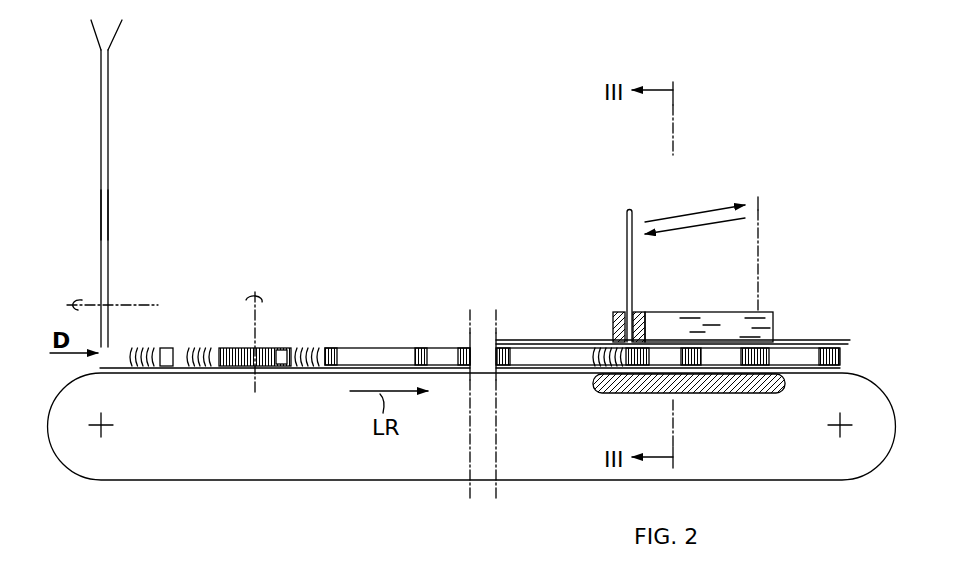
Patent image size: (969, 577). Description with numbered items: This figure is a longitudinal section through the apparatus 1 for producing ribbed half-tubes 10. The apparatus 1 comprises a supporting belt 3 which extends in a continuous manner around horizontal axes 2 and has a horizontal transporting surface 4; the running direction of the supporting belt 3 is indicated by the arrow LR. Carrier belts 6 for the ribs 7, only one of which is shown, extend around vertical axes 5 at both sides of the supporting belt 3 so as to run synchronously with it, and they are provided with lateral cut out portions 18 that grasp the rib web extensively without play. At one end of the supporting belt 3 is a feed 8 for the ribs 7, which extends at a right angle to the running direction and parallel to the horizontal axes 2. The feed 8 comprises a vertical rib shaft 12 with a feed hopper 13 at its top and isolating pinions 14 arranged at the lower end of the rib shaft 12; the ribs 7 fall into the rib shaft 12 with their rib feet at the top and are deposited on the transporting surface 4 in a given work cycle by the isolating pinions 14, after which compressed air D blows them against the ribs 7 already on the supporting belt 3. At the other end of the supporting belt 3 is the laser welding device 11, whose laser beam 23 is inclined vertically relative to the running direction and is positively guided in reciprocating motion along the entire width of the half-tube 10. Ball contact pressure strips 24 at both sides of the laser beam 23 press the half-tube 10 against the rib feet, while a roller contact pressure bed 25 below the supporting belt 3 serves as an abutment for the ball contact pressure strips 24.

The apparatus 1 is at (353, 207).
The horizontal axes 2 is at (108, 430).
The supporting belt 3 is at (327, 484).
The horizontal transporting surface 4 is at (378, 368).
The vertical axes 5 is at (256, 300).
The carrier belt 6 is at (281, 346).
The ribs 7 is at (321, 347).
The feed 8 is at (112, 213).
The half-tube 10 is at (531, 337).
The laser welding device 11 is at (724, 190).
The vertical rib shaft 12 is at (109, 150).
The feed hopper 13 is at (118, 30).
The isolating pinions 14 is at (80, 300).
The lateral cut out portions 18 is at (232, 367).
The laser beam 23 is at (625, 238).
The ball contact pressure strips 24 is at (612, 314).
The roller contact pressure bed 25 is at (724, 396).